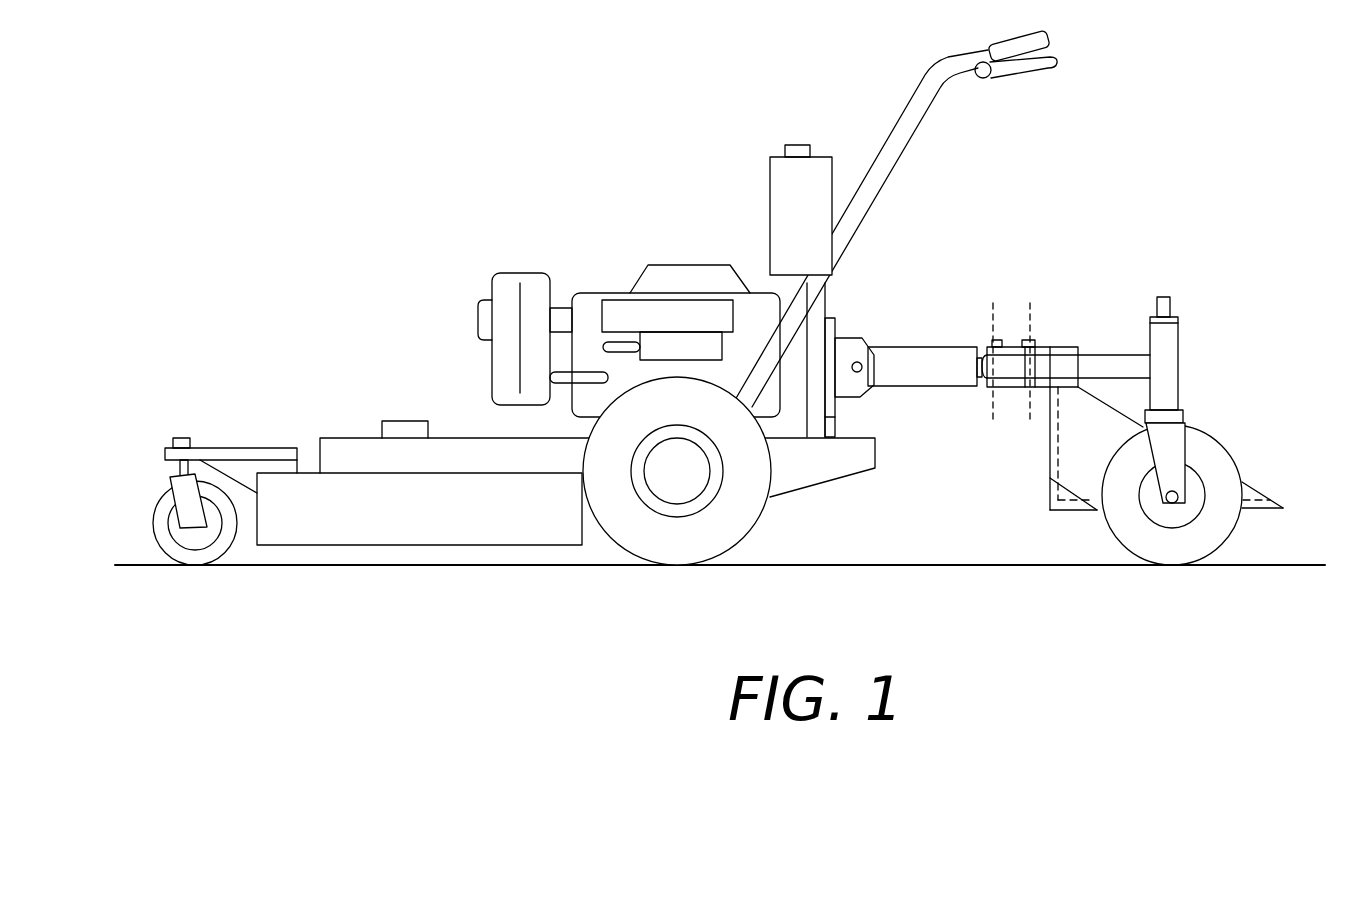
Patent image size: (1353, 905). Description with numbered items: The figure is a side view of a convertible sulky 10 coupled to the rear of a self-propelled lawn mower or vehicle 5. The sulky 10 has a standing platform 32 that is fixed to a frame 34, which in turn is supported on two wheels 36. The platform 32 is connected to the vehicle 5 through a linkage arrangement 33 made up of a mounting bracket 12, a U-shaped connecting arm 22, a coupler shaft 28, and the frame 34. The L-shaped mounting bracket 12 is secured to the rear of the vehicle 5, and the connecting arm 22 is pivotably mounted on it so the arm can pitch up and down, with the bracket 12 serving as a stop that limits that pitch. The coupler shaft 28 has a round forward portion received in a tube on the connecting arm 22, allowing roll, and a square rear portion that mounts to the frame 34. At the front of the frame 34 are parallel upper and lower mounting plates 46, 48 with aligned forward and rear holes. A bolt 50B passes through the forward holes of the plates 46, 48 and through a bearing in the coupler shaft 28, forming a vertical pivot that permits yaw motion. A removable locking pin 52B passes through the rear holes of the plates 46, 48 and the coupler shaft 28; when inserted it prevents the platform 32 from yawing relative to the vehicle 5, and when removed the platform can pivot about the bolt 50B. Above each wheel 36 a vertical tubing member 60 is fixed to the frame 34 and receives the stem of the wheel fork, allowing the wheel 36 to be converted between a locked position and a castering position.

The self-propelled vehicle 5 is at (676, 180).
The sulky 10 is at (1143, 369).
The mounting bracket 12 is at (856, 340).
The connecting arm 22 is at (925, 372).
The coupler shaft 28 is at (1013, 362).
The standing platform 32 is at (1270, 500).
The linkage arrangement 33 is at (1040, 267).
The frame 34 is at (1100, 358).
The wheel 36 is at (1212, 532).
The upper mounting plate 46 is at (1058, 352).
The lower mounting plate 48 is at (1000, 423).
The bolt 50B is at (992, 340).
The locking pin 52B is at (1035, 340).
The vertical tubing member 60 is at (1240, 413).